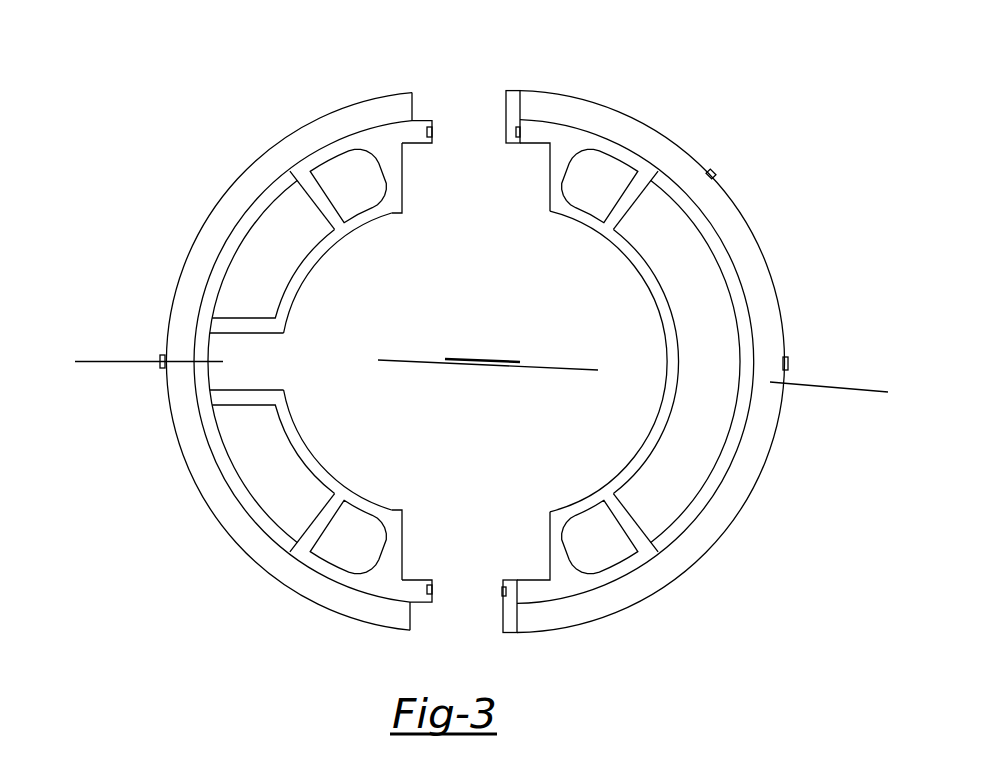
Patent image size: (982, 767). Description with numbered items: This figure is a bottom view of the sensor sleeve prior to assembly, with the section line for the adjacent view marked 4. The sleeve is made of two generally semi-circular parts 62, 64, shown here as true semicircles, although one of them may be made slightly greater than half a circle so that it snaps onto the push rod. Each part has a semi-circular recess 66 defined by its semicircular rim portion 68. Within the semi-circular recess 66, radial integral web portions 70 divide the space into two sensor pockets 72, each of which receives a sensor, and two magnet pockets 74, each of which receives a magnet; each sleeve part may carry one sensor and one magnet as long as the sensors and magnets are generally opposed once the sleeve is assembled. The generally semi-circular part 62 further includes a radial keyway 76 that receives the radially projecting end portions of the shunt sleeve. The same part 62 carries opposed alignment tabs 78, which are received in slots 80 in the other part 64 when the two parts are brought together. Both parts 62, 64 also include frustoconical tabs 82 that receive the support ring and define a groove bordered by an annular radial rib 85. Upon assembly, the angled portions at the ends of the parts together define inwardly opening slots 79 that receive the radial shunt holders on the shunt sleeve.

The generally semi-circular part 62 is at (241, 561).
The generally semi-circular part 64 is at (722, 548).
The semi-circular recess 66 is at (297, 237).
The semicircular rim portion 68 is at (628, 465).
The radial integral web portion 70 is at (625, 210).
The sensor pocket 72 is at (372, 190).
The magnet pocket 74 is at (608, 173).
The radial keyway 76 is at (240, 390).
The alignment tab 78 is at (516, 131).
The inwardly opening slot 79 is at (541, 154).
The slot 80 is at (431, 128).
The frustoconical tab 82 is at (787, 358).
The annular radial rib 85 is at (185, 427).
The section line 4- 4 is at (95, 350).